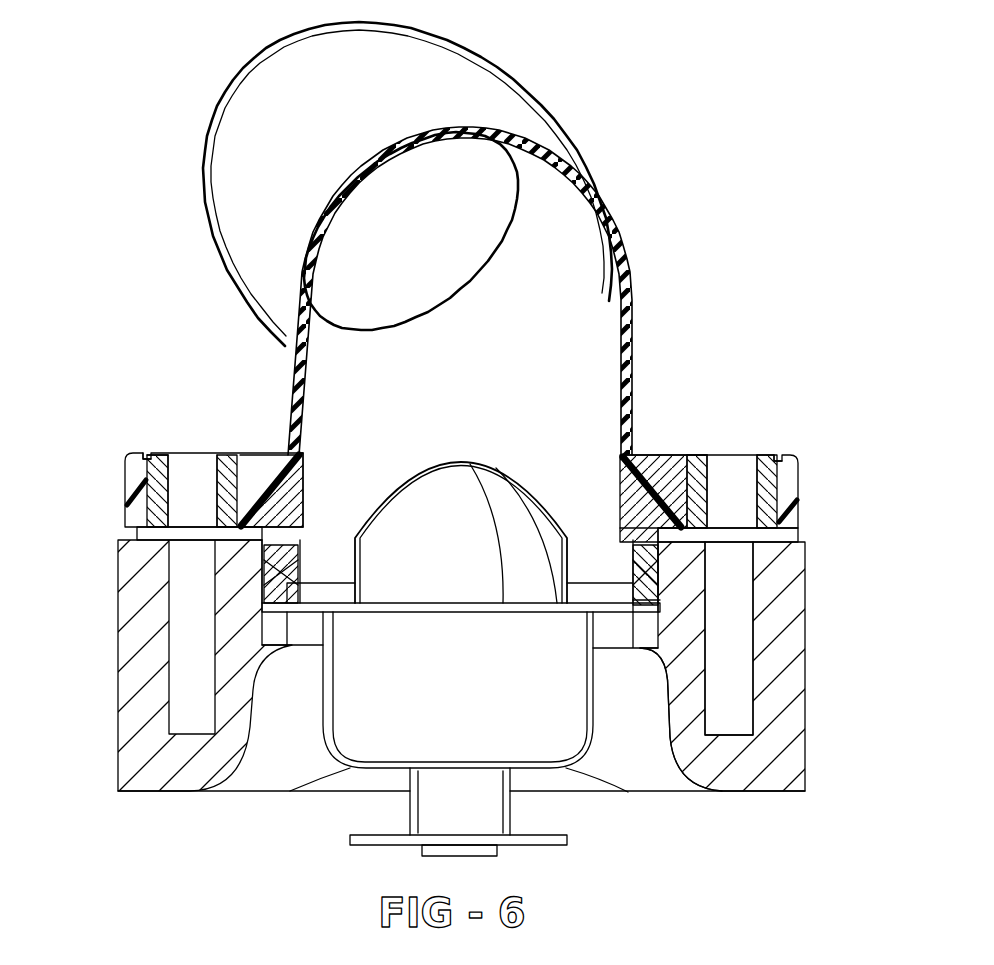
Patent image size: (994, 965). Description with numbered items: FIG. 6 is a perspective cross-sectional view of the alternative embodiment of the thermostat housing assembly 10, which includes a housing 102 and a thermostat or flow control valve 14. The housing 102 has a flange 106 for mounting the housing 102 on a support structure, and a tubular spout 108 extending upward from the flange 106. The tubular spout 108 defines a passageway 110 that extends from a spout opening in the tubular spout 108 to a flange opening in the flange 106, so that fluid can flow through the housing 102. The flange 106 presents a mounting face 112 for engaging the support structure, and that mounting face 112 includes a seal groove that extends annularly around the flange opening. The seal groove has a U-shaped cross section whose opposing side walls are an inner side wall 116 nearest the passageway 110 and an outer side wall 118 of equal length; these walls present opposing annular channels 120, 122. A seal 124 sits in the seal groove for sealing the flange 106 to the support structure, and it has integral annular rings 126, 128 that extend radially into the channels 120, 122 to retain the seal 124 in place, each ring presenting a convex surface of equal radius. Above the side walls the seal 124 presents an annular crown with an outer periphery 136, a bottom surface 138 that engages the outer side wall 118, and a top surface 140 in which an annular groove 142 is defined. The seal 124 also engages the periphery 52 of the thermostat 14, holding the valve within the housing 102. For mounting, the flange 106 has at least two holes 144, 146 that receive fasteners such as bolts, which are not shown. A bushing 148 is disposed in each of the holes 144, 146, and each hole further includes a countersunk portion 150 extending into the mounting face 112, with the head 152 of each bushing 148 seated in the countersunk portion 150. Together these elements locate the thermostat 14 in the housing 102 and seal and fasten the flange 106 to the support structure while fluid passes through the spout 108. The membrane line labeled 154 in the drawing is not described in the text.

The thermostat housing assembly 10 is at (110, 243).
The thermostat 14 is at (405, 738).
The periphery 52 is at (375, 607).
The housing 102 is at (266, 140).
The flange 106 is at (132, 484).
The tubular spout 108 is at (457, 80).
The passageway 110 is at (436, 370).
The mounting face 112 is at (135, 530).
The inner side wall 116 is at (306, 582).
The outer side wall 118 is at (262, 585).
The channel 120 is at (318, 505).
The channel 122 is at (275, 572).
The seal 124 is at (296, 612).
The annular ring 126 is at (628, 565).
The annular ring 128 is at (658, 557).
The outer periphery 136 is at (653, 593).
The bottom surface 138 is at (658, 570).
The top surface 140 is at (660, 613).
The annular groove 142 is at (660, 595).
The hole 144 is at (292, 462).
The hole 146 is at (780, 493).
The bushing 148 is at (160, 483).
The countersunk portion 150 is at (145, 455).
The head 152 is at (145, 455).
The membrane 154 is at (625, 598).